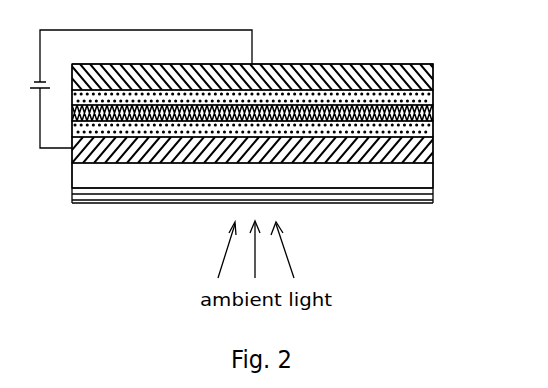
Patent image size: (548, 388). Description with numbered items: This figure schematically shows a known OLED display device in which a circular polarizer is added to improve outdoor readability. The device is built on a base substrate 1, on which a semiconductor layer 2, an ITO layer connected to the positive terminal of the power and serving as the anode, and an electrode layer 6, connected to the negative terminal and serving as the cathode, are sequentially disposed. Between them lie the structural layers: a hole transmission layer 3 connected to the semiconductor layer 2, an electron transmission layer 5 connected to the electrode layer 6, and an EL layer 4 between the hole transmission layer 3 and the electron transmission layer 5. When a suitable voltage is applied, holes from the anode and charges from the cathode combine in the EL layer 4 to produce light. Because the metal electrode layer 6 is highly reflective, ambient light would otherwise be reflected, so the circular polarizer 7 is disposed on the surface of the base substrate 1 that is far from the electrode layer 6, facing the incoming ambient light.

The base substrate 1 is at (431, 180).
The semiconductor layer 2 is at (433, 152).
The hole transmission layer 3 is at (433, 132).
The EL layer 4 is at (433, 108).
The electron transmission layer 5 is at (433, 92).
The electrode layer 6 is at (433, 66).
The circular polarizer 7 is at (433, 204).